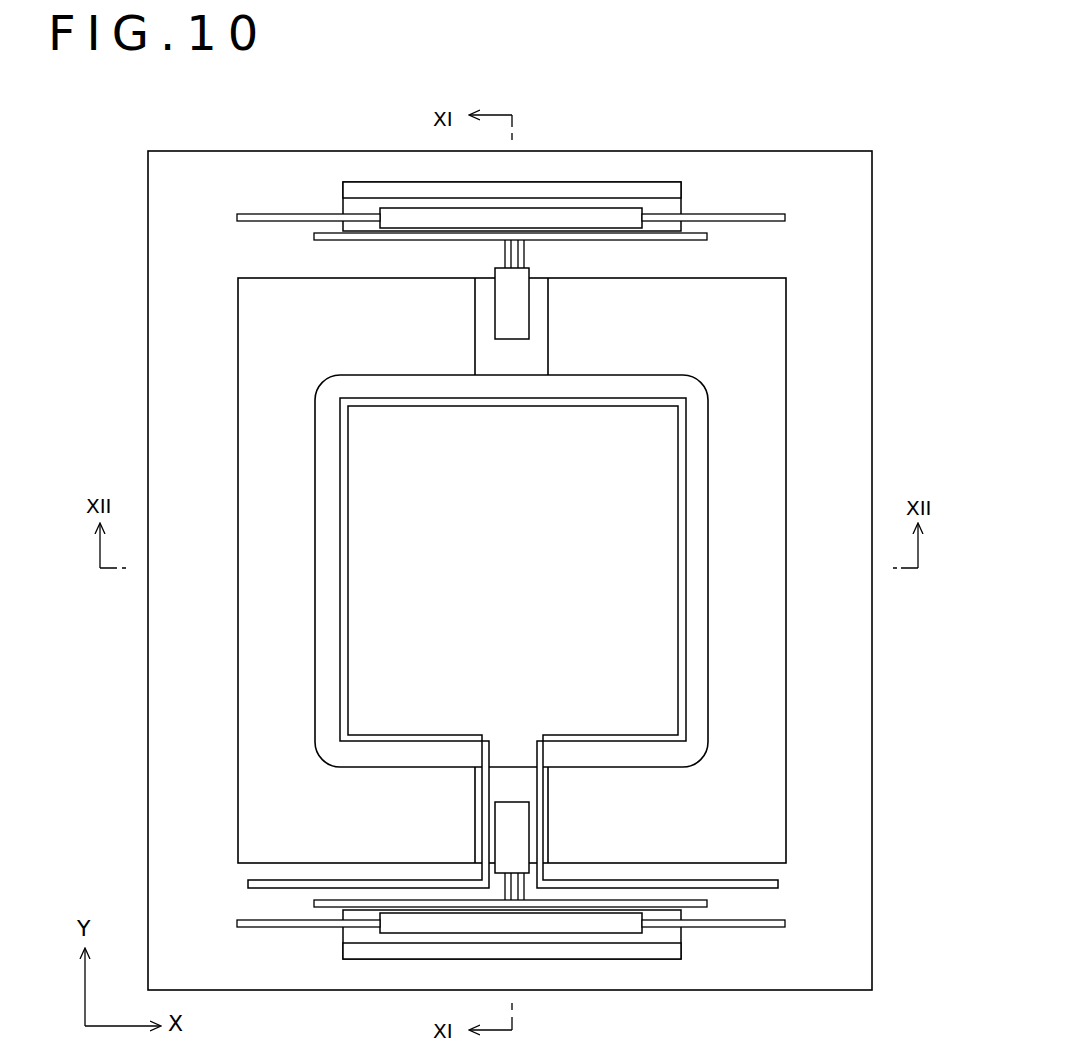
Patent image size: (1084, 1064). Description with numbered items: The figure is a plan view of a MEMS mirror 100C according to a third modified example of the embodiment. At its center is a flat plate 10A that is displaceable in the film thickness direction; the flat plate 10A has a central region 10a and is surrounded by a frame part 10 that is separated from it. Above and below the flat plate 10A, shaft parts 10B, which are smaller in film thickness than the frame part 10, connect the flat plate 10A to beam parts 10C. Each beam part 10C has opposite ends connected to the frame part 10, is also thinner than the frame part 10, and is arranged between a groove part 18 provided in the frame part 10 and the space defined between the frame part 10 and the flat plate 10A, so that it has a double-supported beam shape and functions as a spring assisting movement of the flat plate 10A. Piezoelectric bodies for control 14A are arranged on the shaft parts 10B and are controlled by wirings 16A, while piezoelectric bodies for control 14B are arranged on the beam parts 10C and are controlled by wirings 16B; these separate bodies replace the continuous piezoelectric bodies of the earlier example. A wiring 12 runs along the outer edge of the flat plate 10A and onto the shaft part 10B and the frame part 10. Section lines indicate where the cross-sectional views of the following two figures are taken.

The MEMS mirror 100C is at (128, 203).
The frame part 10 is at (857, 682).
The flat plate 10A is at (708, 420).
The opening 10a is at (615, 607).
The shaft part 10B is at (549, 328).
The beam part 10C is at (343, 206).
The wiring 12 is at (686, 702).
The piezoelectric body for control 14A is at (512, 308).
The piezoelectric body for control 14B is at (582, 218).
The wiring 16A is at (697, 236).
The wiring 16B is at (748, 216).
The groove part 18 is at (373, 190).